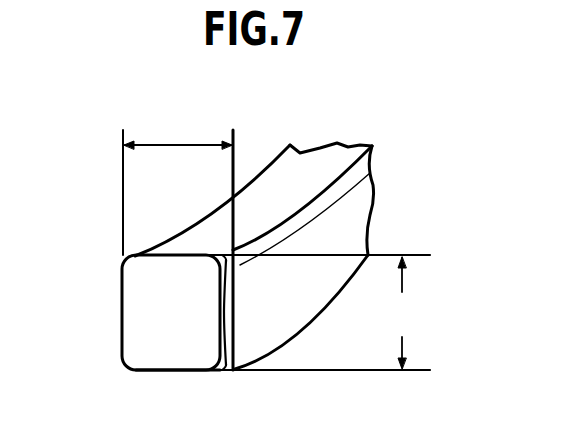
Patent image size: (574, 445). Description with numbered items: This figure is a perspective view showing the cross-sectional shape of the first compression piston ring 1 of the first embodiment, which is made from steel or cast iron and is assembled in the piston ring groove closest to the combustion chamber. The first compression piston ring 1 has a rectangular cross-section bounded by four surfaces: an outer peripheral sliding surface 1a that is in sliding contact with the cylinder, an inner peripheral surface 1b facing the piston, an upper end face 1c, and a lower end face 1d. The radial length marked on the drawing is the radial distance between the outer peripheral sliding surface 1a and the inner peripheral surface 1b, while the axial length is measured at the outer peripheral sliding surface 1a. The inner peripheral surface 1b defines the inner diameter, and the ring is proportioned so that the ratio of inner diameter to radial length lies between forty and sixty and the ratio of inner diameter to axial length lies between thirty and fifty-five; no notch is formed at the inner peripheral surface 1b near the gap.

The first compression piston ring 1 is at (437, 133).
The outer peripheral sliding surface 1a is at (278, 302).
The inner peripheral surface 1b is at (122, 314).
The upper end face 1c is at (212, 232).
The lower end face 1d is at (180, 372).